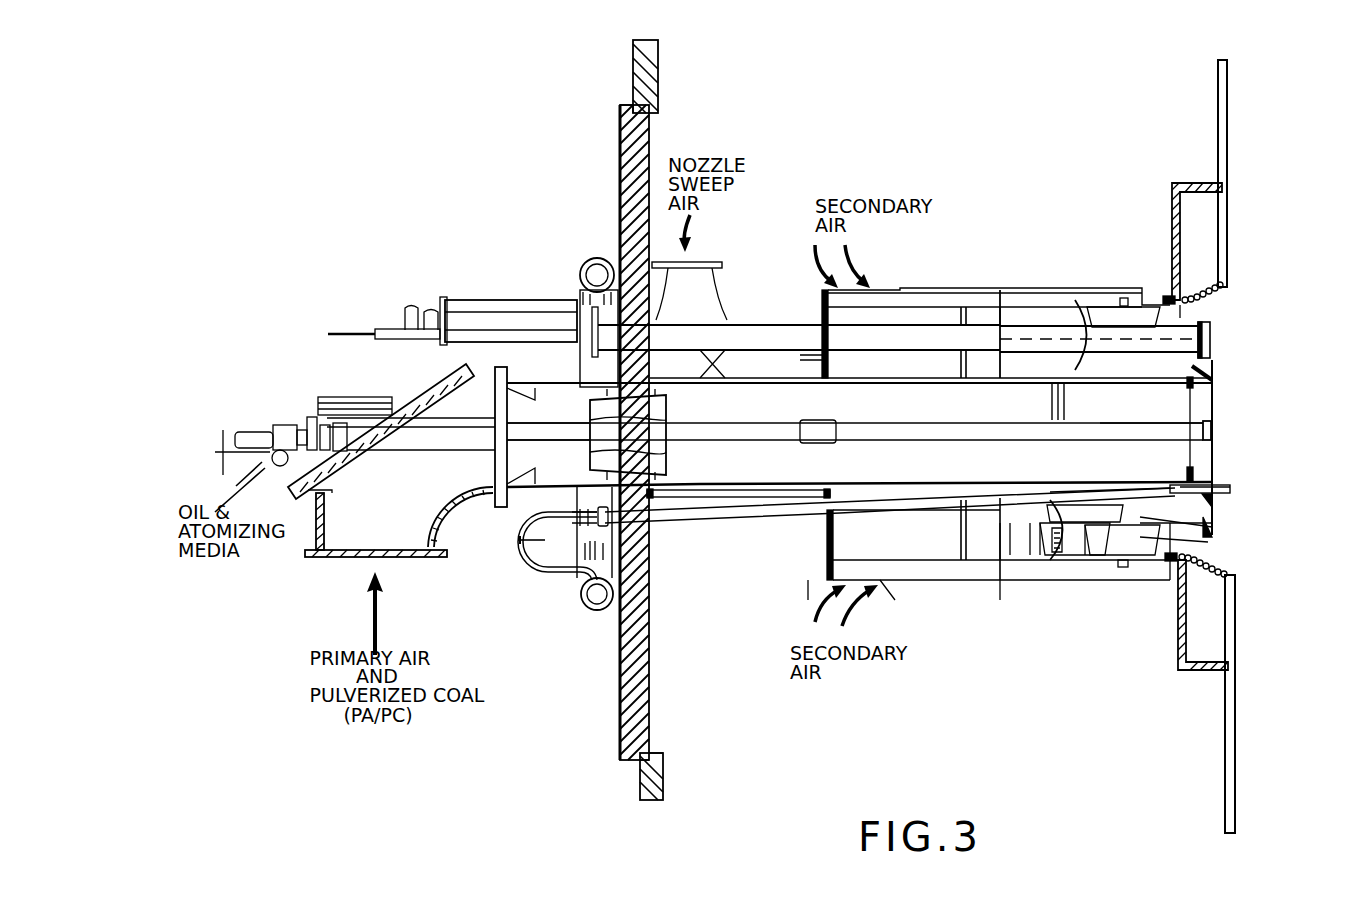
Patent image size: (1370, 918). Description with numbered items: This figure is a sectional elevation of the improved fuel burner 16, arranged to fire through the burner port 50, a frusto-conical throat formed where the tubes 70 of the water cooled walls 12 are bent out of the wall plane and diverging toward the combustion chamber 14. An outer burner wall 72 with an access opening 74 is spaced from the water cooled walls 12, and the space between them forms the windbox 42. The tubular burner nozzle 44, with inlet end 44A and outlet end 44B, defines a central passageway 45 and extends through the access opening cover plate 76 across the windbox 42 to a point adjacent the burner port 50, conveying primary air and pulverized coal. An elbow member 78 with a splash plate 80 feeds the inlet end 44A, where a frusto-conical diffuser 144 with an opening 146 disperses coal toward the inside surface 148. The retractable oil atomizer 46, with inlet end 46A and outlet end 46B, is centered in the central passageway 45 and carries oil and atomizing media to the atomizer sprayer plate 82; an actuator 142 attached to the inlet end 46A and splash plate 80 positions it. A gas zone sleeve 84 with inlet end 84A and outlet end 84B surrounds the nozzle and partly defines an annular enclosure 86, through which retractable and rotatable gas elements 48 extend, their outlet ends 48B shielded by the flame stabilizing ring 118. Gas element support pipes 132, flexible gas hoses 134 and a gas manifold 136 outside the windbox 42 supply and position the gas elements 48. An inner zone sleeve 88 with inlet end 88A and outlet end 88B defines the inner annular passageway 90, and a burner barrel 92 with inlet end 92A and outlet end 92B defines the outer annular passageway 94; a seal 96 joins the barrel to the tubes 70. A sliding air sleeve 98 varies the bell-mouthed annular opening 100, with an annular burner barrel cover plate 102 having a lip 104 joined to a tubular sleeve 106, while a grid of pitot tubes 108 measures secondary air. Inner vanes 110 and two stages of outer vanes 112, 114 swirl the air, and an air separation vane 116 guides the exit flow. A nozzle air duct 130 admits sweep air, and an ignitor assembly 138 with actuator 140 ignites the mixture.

The water cooled walls 12 is at (1236, 770).
The combustion chamber 14 is at (1323, 308).
The fuel burner 16 is at (386, 270).
The windbox 42 is at (920, 722).
The tubular burner nozzle 44 is at (760, 505).
The inlet end 44A is at (540, 492).
The outlet end 44B is at (1140, 488).
The central passageway 45 is at (916, 409).
The retractable oil atomizer 46 is at (818, 420).
The inlet end 46A is at (438, 452).
The outlet end 46B is at (1128, 422).
The retractable and rotatable gas elements 48 is at (1216, 500).
The outlet ends 48B is at (1232, 490).
The burner port 50 is at (1300, 494).
The tubes 70 is at (1222, 288).
The outer burner wall 72 is at (660, 93).
The access opening 74 is at (655, 748).
The access opening cover plate 76 is at (620, 680).
The elbow member 78 is at (312, 562).
The splash plate 80 is at (430, 392).
The atomizer sprayer plate 82 is at (1212, 432).
The gas zone sleeve 84 is at (1210, 336).
The inlet end 84A is at (1015, 360).
The outlet end 84B is at (1070, 386).
The annular enclosure 86 is at (1055, 320).
The inner zone sleeve 88 is at (1050, 560).
The inlet end 88A is at (1025, 560).
The outlet end 88B is at (1214, 545).
The inner annular passageway 90 is at (1070, 500).
The burner barrel 92 is at (1082, 300).
The inlet end 92A is at (827, 575).
The outlet end 92B is at (1130, 306).
The outer annular passageway 94 is at (1182, 312).
The seal 96 is at (1168, 295).
The sliding air sleeve 98 is at (912, 590).
The bell-mouthed annular opening 100 is at (890, 565).
The annular burner barrel cover plate 102 is at (822, 305).
The lip 104 is at (822, 292).
The tubular sleeve 106 is at (705, 360).
The grid of pitot tubes 108 is at (965, 316).
The inner vanes 110 is at (1060, 555).
The outer vanes 112 is at (1100, 558).
The outer vane 114 is at (1042, 558).
The air separation vane 116 is at (1215, 535).
The flame stabilizing ring 118 is at (1195, 474).
The nozzle air duct 130 is at (673, 302).
The gas element support pipes 132 is at (704, 520).
The flexible gas hose 134 is at (535, 562).
The gas manifold 136 is at (596, 606).
The ignitor assembly 138 is at (840, 340).
The actuator 140 is at (500, 298).
The actuator 142 is at (320, 395).
The frusto-conical diffuser 144 is at (603, 447).
The opening 146 is at (672, 430).
The inside surface 148 is at (918, 480).